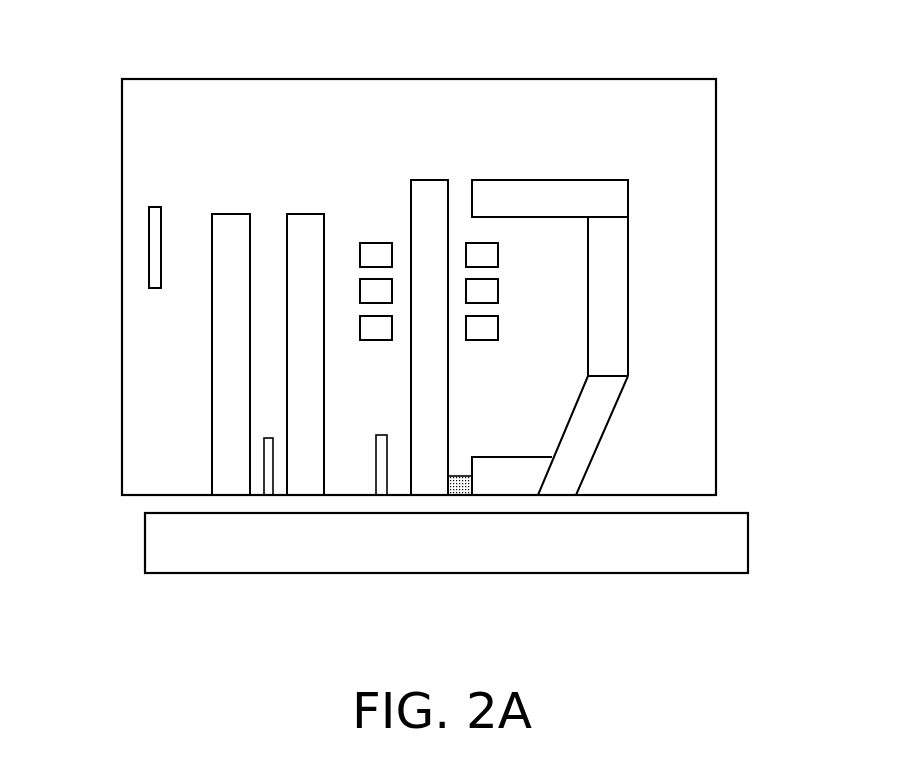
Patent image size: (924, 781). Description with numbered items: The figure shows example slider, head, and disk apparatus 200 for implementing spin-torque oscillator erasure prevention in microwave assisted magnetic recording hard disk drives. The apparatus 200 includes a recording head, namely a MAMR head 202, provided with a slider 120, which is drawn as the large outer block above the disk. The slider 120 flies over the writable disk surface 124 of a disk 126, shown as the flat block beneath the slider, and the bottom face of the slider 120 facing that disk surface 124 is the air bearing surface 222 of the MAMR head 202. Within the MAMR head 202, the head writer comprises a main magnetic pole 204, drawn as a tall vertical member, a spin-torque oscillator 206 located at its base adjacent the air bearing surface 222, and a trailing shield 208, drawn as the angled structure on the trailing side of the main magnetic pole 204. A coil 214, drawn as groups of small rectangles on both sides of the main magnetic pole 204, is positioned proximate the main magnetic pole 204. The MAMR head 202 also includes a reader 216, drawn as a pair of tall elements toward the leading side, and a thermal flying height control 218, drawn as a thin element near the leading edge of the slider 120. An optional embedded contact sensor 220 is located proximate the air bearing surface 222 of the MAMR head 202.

The slider, head, and disk apparatus 200 is at (435, 54).
The slider 120 is at (698, 107).
The MAMR head 202 is at (346, 292).
The main magnetic pole 204 is at (429, 337).
The spin-torque oscillator 206 is at (465, 476).
The trailing shield 208 is at (506, 478).
The coil 214 is at (369, 222).
The reader 216 is at (262, 204).
The thermal flying height control 218 is at (155, 205).
The embedded contact sensor 220 is at (381, 435).
The air bearing surface 222 is at (716, 496).
The writable disk surface 124 is at (178, 514).
The disk 126 is at (731, 550).